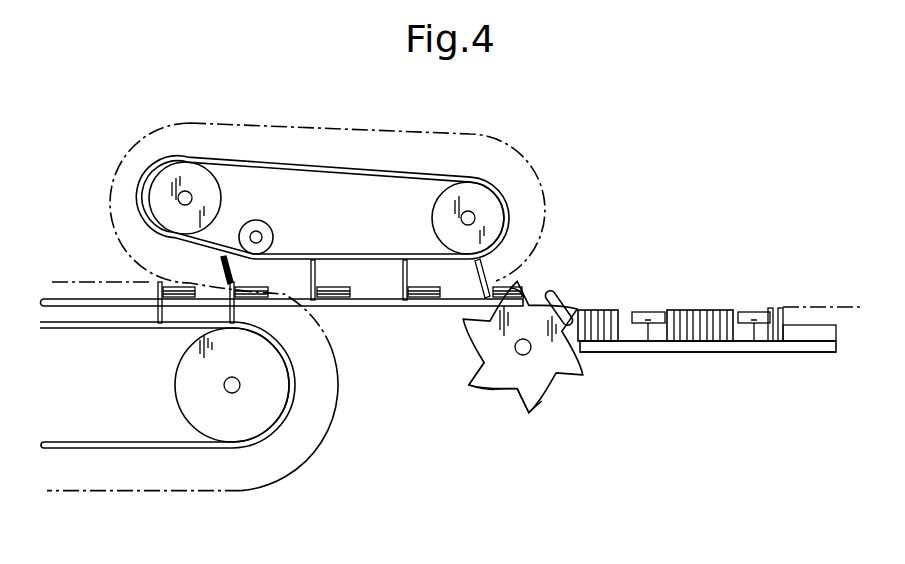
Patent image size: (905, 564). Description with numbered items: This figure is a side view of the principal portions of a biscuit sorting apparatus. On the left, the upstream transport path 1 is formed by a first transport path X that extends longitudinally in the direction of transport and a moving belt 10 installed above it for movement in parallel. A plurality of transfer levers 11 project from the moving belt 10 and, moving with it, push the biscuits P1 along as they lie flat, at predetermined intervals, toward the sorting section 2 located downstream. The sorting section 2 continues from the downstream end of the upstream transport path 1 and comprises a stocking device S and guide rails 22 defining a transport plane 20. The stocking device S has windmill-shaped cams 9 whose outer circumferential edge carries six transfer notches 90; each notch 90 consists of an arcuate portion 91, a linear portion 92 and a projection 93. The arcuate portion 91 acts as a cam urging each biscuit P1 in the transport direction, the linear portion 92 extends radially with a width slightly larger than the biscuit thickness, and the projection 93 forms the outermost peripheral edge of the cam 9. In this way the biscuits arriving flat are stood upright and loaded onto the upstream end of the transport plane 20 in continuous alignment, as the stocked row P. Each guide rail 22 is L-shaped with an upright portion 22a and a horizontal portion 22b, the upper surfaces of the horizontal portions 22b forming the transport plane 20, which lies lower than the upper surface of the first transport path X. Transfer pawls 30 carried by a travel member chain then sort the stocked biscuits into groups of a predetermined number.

The upstream transport path 1 is at (343, 330).
The sorting section 2 is at (704, 292).
The cam 9 is at (515, 394).
The moving belt 10 is at (290, 252).
The transfer levers 11 is at (223, 263).
The transport plane 20 is at (645, 344).
The guide rail 22 is at (739, 355).
The upright portion 22a is at (815, 330).
The horizontal portion 22b is at (784, 352).
The transfer pawls 30 is at (650, 312).
The transfer notches 90 is at (515, 394).
The arcuate portion 91 is at (520, 410).
The linear portion 92 is at (489, 392).
The projection 93 is at (463, 411).
The stocking device S is at (553, 247).
The first transport path X is at (384, 306).
The stacked sheets P is at (736, 296).
The biscuits P1 is at (558, 300).